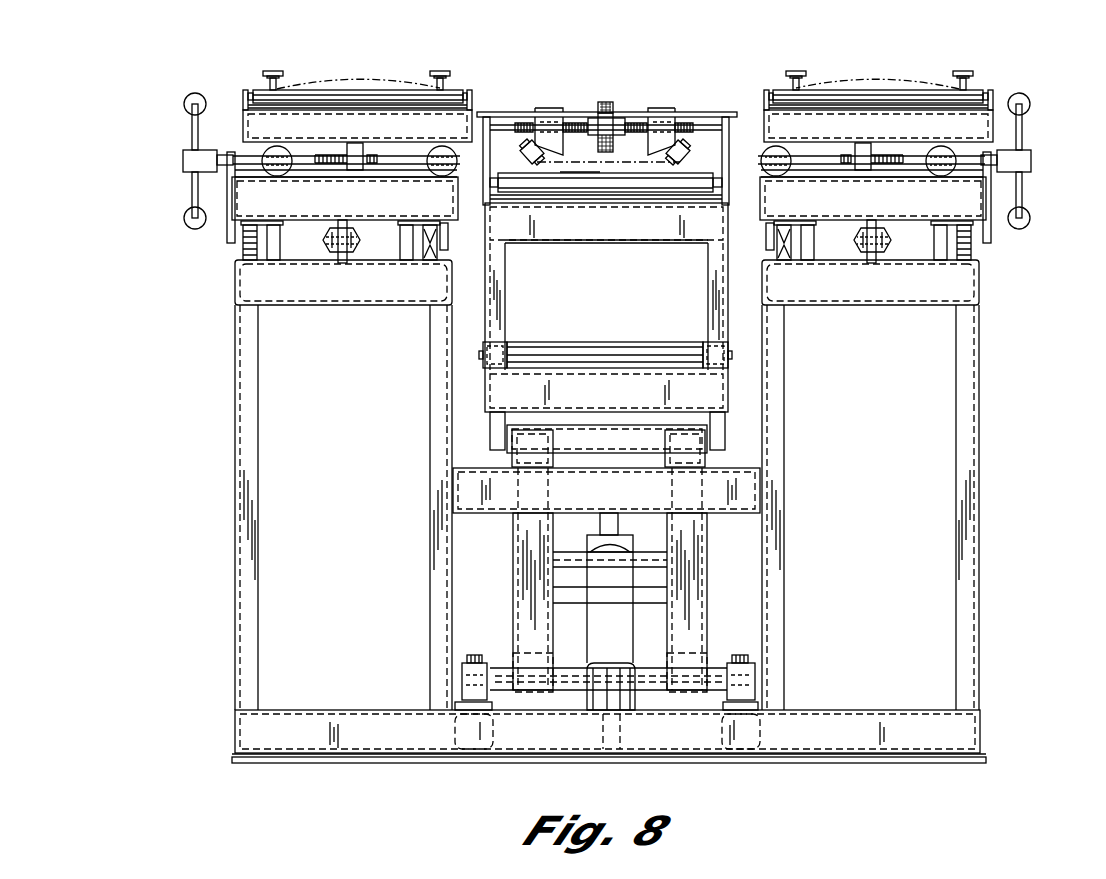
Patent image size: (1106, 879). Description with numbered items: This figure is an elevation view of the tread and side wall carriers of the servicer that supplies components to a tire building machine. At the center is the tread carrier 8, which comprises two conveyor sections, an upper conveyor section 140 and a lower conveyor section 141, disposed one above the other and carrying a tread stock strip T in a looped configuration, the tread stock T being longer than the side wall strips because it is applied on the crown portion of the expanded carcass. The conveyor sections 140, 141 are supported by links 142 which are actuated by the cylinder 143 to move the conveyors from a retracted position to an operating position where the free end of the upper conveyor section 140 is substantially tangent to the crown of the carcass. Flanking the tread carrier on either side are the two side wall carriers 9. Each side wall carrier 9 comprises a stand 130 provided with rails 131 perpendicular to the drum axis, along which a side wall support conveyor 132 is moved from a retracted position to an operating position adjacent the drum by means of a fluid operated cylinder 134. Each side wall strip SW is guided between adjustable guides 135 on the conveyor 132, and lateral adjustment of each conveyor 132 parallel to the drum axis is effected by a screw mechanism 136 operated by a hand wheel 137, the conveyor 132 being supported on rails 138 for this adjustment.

The tread carrier 8 is at (710, 282).
The side wall carrier 9 is at (472, 90).
The stand 130 is at (238, 448).
The rails 131 is at (246, 268).
The side wall support conveyor 132 is at (245, 118).
The fluid operated cylinder 134 is at (347, 254).
The adjustable guides 135 is at (283, 86).
The screw mechanism 136 is at (331, 165).
The hand wheel 137 is at (190, 187).
The rails 138 is at (413, 172).
The upper conveyor section 140 is at (637, 180).
The lower conveyor section 141 is at (577, 350).
The links 142 is at (516, 567).
The cylinder 143 is at (610, 611).
The tread stock strip T is at (580, 172).
The side wall strip SW is at (348, 84).